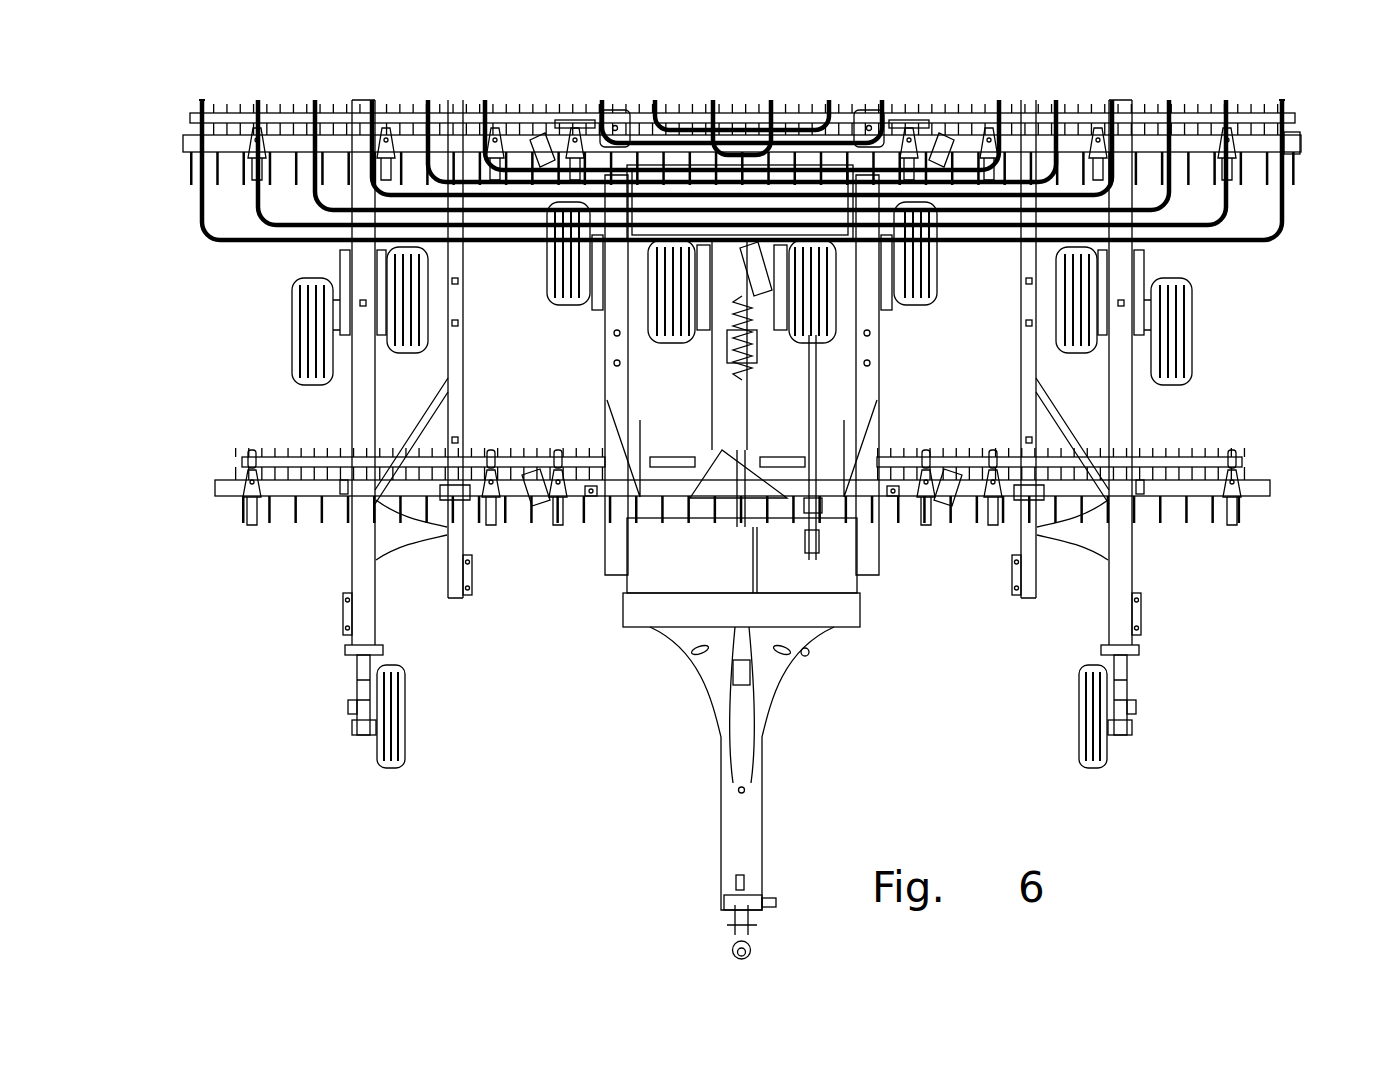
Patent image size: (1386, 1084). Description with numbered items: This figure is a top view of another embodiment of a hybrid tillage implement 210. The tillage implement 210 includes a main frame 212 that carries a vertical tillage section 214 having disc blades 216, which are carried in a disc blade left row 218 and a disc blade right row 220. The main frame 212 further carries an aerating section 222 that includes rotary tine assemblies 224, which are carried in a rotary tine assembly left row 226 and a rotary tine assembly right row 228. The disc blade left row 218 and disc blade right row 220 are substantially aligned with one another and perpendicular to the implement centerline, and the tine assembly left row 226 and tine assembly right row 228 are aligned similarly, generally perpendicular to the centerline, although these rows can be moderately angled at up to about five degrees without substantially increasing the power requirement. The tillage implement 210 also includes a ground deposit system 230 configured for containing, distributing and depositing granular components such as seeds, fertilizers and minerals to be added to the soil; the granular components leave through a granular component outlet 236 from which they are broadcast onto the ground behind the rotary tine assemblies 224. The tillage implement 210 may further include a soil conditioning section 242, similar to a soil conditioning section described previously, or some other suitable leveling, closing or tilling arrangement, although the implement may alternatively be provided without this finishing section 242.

The tillage implement 210 is at (282, 768).
The main frame 212 is at (712, 682).
The vertical tillage section 214 is at (205, 491).
The disc blades 216 is at (312, 503).
The disc blade left row 218 is at (948, 545).
The disc blade right row 220 is at (512, 540).
The aerating section 222 is at (172, 150).
The rotary tine assemblies 224 is at (203, 112).
The rotary tine assembly left row 226 is at (1213, 257).
The rotary tine assembly right row 228 is at (272, 247).
The ground deposit system 230 is at (758, 220).
The granular component outlet 236 is at (205, 102).
The soil conditioning section 242 is at (1305, 105).